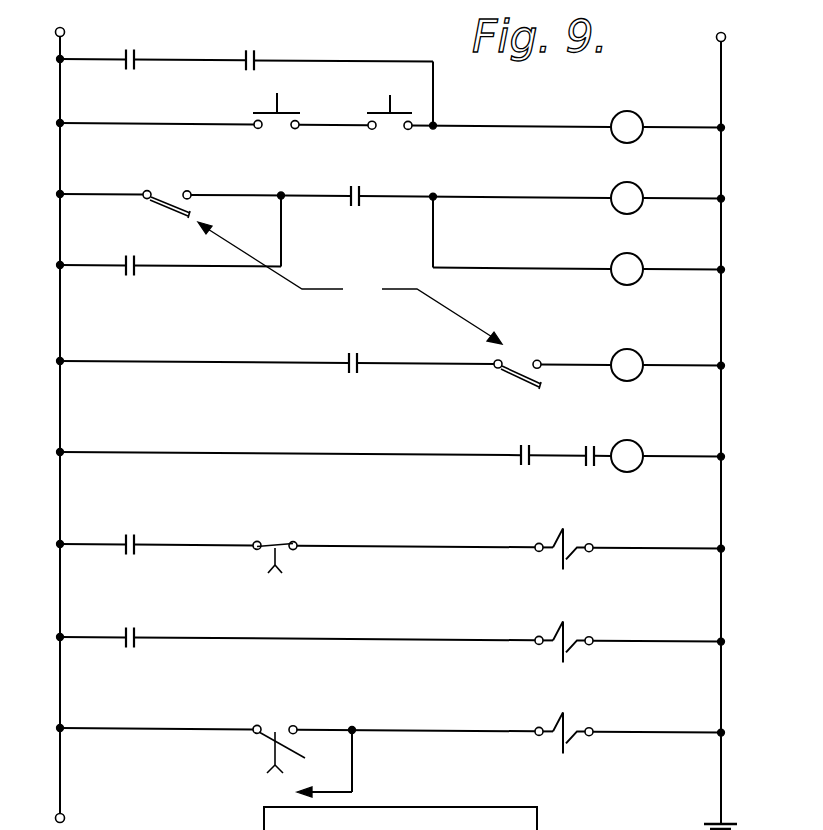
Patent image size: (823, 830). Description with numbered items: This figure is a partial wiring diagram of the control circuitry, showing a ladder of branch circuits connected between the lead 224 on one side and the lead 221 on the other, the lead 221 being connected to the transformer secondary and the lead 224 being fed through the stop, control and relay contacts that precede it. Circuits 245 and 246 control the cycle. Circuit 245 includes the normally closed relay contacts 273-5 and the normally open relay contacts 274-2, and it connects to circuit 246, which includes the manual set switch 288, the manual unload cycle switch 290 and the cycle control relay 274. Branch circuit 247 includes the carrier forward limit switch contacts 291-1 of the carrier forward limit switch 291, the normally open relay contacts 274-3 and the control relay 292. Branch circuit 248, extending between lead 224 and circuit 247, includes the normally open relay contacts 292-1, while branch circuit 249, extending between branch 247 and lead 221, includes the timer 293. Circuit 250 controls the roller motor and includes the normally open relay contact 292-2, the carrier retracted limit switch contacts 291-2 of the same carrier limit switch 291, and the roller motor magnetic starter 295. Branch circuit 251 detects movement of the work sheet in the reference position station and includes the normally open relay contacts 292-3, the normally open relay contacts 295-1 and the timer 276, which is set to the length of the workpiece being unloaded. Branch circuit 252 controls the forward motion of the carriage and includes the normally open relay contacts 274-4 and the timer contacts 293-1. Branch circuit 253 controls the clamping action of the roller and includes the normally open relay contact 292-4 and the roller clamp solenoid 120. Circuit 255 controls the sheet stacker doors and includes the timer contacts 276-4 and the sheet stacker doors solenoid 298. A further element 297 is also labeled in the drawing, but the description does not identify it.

The lead 224 is at (63, 148).
The lead 221 is at (724, 82).
The circuit 245 is at (78, 57).
The circuit 246 is at (72, 123).
The branch circuit 247 is at (92, 180).
The branch circuit 248 is at (92, 245).
The branch circuit 249 is at (436, 240).
The circuit 250 is at (88, 362).
The branch circuit 251 is at (115, 448).
The branch circuit 252 is at (80, 545).
The branch circuit 253 is at (80, 637).
The circuit 255 is at (82, 728).
The normally closed relay contacts 273-5 is at (125, 66).
The normally open relay contacts 274-2 is at (256, 58).
The normally open relay contacts 274-3 is at (362, 197).
The normally open relay contacts 274-4 is at (140, 545).
The normally open relay contacts 292-1 is at (137, 268).
The normally open relay contact 292-2 is at (390, 385).
The normally open relay contacts 292-3 is at (518, 457).
The normally open relay contact 292-4 is at (140, 637).
The normally open relay contacts 295-1 is at (583, 463).
The manual set switch 288 is at (300, 93).
The manual unload cycle switch 290 is at (380, 110).
The carrier forward limit switch contacts 291-1 is at (170, 193).
The carrier retracted limit switch contacts 291-2 is at (513, 357).
The carrier forward limit switch 291 is at (350, 283).
The timer contacts 293-1 is at (282, 545).
The timer contacts 276-4 is at (290, 710).
The cycle control relay 274 is at (625, 118).
The control relay 292 is at (628, 195).
The timer 293 is at (632, 265).
The roller motor magnetic starter 295 is at (628, 362).
The timer 276 is at (628, 458).
The roller clamp solenoid 120 is at (572, 560).
The thermal switch 297 is at (575, 655).
The sheet stacker doors solenoid 298 is at (572, 740).